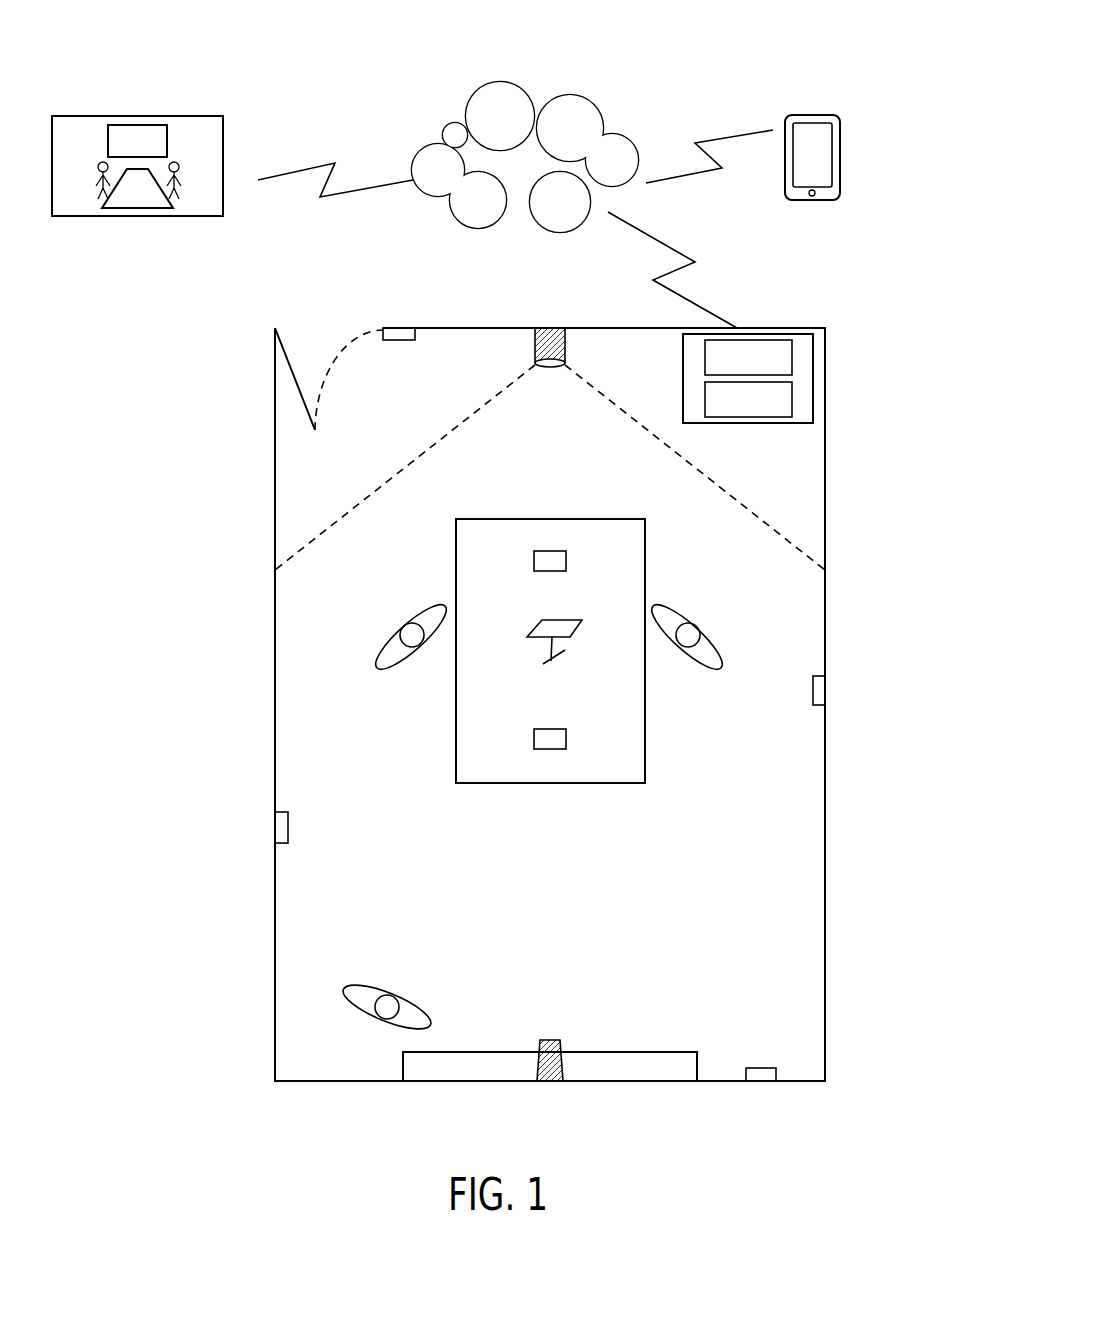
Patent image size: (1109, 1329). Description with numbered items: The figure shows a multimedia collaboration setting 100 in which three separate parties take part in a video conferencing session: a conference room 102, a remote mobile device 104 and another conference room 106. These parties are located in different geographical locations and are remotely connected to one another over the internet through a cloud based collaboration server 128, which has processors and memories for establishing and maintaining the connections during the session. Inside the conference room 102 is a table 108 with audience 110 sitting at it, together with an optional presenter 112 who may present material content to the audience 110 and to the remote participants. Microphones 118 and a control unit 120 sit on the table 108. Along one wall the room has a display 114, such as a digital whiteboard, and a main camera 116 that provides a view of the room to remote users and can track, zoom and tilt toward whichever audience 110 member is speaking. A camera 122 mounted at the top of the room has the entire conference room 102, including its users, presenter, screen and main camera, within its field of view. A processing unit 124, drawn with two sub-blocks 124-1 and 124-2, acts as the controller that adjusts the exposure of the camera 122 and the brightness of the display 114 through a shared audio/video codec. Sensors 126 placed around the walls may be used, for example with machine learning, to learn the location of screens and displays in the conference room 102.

The setting 100 is at (888, 84).
The conference room 102 is at (825, 462).
The remote mobile device 104 is at (815, 115).
The conference room 106 is at (223, 127).
The table 108 is at (645, 545).
The audience 110 is at (392, 667).
The presenter 112 is at (415, 1002).
The display 114 is at (505, 1068).
The main camera 116 is at (562, 1072).
The microphones 118 is at (566, 561).
The control unit 120 is at (582, 627).
The camera 122 is at (565, 340).
The processing unit 124 is at (825, 360).
The codec 124-1 is at (727, 372).
The controller 124-2 is at (727, 414).
The sensors 126 is at (400, 340).
The cloud based collaboration server 128 is at (538, 171).